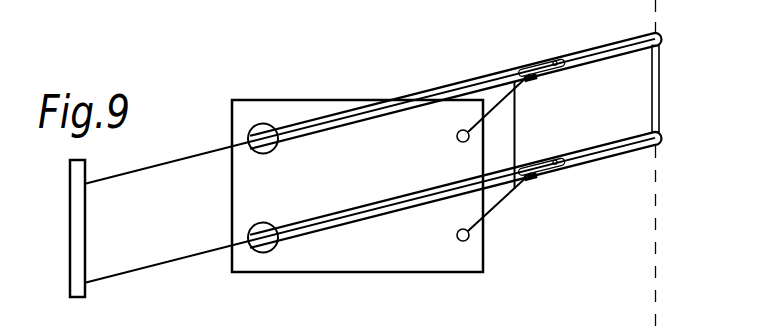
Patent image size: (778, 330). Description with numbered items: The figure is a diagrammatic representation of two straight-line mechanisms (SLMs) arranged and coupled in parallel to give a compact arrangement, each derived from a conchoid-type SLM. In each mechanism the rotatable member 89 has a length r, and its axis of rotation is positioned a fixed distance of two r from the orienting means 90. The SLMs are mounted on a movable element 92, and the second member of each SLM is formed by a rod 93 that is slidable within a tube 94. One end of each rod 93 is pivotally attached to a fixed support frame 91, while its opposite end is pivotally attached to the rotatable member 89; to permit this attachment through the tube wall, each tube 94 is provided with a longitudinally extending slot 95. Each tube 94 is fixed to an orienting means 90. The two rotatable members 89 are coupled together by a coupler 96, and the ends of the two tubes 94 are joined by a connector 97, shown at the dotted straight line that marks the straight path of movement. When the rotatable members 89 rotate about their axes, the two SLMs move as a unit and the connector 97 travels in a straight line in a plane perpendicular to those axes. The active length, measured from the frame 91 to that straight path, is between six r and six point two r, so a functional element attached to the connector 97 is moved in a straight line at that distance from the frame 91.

The rotatable member 89 is at (497, 104).
The orienting means 90 is at (262, 124).
The fixed support frame 91 is at (80, 238).
The movable element 92 is at (362, 272).
The rod 93 is at (172, 161).
The tube 94 is at (601, 47).
The longitudinally extending slot 95 is at (557, 160).
The coupler 96 is at (516, 141).
The connector 97 is at (660, 85).